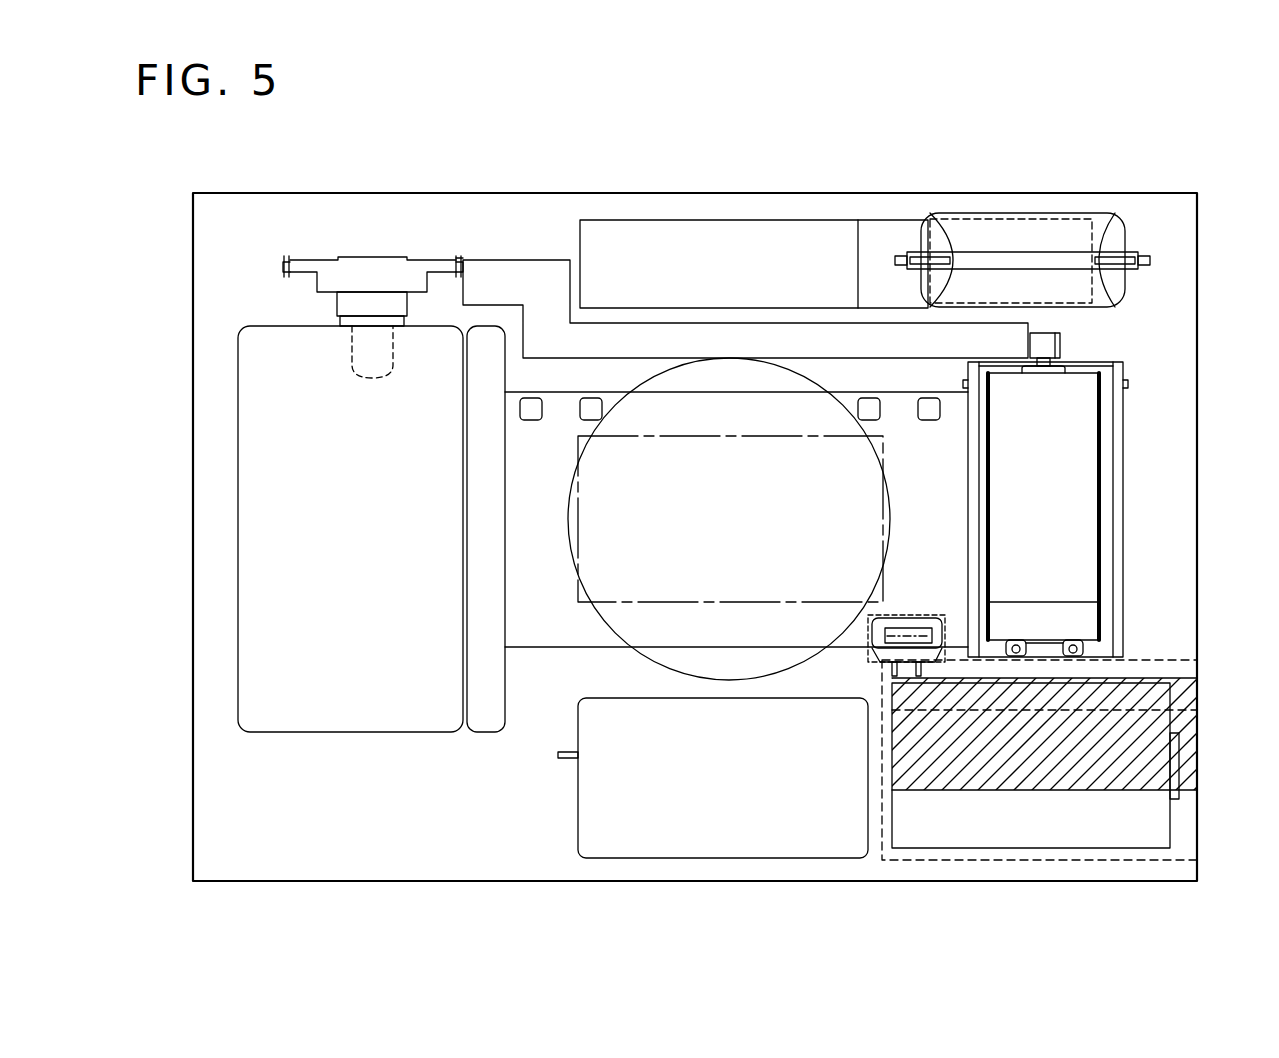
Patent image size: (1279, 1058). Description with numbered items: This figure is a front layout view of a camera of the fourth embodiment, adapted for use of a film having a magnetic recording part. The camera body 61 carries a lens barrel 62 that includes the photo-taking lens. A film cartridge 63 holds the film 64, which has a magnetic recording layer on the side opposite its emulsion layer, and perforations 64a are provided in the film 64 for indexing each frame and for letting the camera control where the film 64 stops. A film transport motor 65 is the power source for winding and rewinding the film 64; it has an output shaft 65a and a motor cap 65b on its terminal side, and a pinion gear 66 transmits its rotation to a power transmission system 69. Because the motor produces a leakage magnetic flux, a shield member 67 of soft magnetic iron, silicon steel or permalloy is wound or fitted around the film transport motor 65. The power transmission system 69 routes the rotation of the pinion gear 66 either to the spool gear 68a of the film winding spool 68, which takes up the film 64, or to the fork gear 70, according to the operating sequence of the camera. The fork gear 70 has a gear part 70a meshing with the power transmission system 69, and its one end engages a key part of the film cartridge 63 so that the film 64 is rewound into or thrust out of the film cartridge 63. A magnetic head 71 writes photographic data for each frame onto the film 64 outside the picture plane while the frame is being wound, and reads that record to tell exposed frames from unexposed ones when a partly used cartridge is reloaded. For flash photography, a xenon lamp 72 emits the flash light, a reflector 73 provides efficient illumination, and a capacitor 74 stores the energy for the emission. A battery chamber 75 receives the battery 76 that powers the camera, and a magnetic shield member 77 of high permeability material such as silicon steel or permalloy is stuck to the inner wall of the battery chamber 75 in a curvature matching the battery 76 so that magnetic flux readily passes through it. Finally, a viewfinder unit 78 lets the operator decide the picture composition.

The camera body 61 is at (193, 463).
The lens barrel 62 is at (665, 668).
The film cartridge 63 is at (368, 733).
The film 64 is at (540, 648).
The perforations 64a is at (580, 420).
The film transport motor 65 is at (1087, 370).
The output shaft 65a is at (1047, 363).
The motor cap 65b is at (1080, 630).
The pinion gear 66 is at (1062, 340).
The shield member 67 is at (1103, 436).
The film winding spool 68 is at (1115, 540).
The spool gear 68a is at (1122, 368).
The power transmission system 69 is at (525, 258).
The fork gear 70 is at (353, 265).
The gear part 70a is at (453, 262).
The magnetic head 71 is at (918, 612).
The xenon lamp 72 is at (1028, 228).
The reflector 73 is at (972, 213).
The capacitor 74 is at (772, 860).
The battery chamber 75 is at (1088, 862).
The battery 76 is at (1003, 850).
The magnetic shield member 77 is at (1185, 695).
The viewfinder unit 78 is at (698, 220).